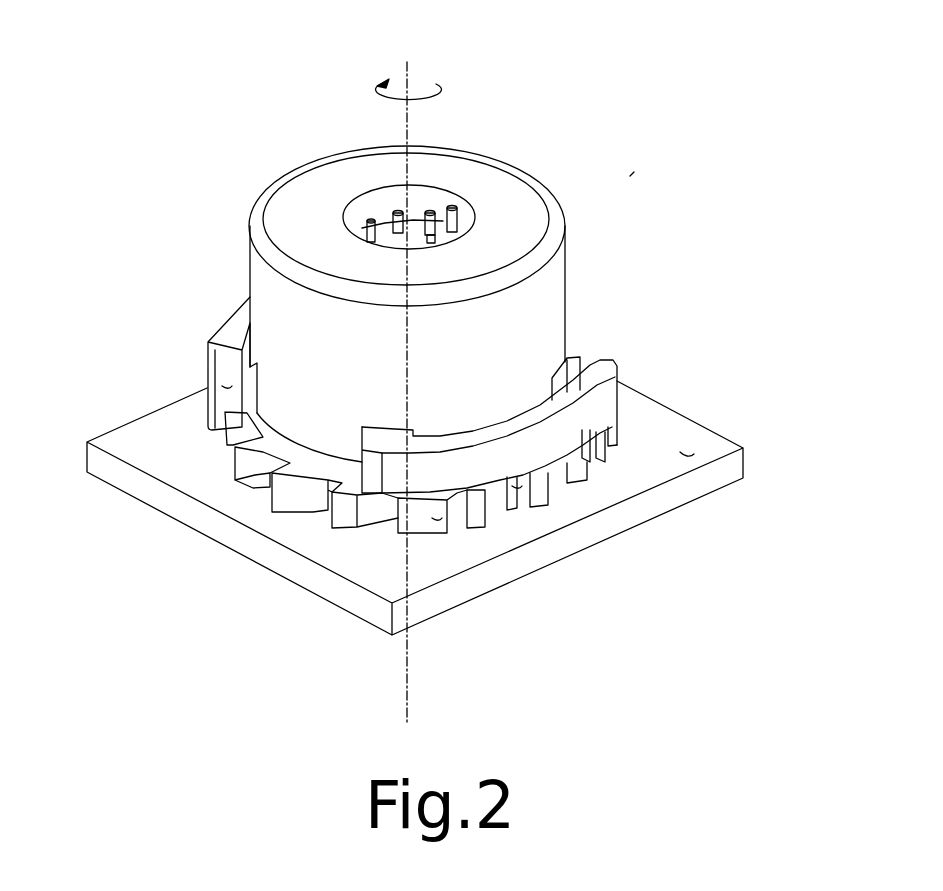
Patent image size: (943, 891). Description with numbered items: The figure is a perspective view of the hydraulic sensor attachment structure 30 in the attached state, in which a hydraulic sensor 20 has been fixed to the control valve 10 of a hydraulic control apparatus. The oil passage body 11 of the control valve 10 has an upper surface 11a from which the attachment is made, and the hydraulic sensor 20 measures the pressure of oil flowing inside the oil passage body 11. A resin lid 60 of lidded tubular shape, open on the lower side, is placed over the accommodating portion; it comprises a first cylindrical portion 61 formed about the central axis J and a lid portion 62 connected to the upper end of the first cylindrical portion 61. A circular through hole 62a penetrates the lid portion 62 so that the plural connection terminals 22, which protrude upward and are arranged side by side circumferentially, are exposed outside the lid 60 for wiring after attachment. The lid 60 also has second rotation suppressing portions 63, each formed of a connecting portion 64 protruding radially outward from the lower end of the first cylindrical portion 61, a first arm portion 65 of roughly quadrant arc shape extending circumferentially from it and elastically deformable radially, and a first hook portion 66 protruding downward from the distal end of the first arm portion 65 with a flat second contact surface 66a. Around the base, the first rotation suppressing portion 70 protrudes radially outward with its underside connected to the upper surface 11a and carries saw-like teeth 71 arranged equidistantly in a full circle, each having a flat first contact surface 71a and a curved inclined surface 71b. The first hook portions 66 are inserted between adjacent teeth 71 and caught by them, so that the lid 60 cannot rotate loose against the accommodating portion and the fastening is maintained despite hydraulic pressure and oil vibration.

The control valve 10 is at (440, 486).
The oil passage body 11 is at (706, 442).
The upper surface 11a is at (683, 458).
The hydraulic sensor 20 is at (403, 159).
The connection terminals 22 is at (397, 211).
The hydraulic sensor attachment structure 30 is at (642, 170).
The lid 60 is at (420, 360).
The first cylindrical portion 61 is at (300, 190).
The lid portion 62 is at (543, 322).
The through hole 62a is at (447, 207).
The second rotation suppressing portions 63 is at (500, 481).
The connecting portion 64 is at (360, 435).
The first arm portion 65 is at (538, 458).
The first hook portion 66 is at (405, 425).
The second contact surface 66a is at (226, 386).
The first rotation suppressing portion 70 is at (413, 547).
The teeth 71 is at (258, 452).
The first contact surface 71a is at (516, 487).
The inclined surface 71b is at (437, 520).
The central axis J is at (412, 73).